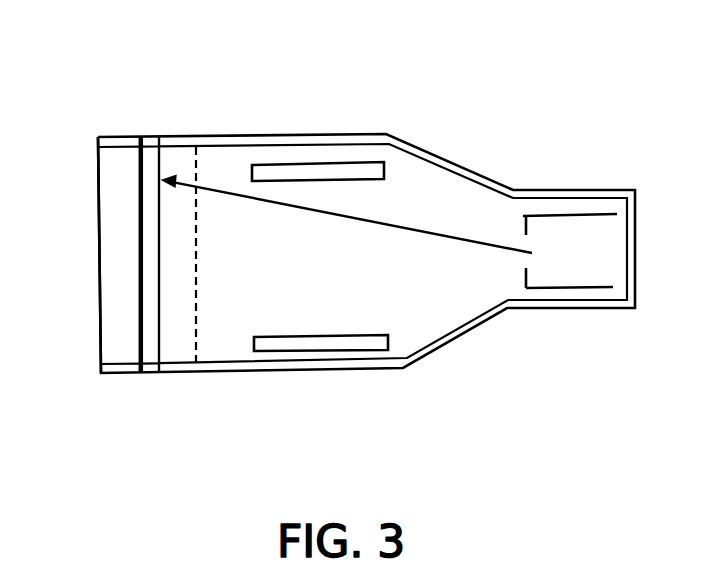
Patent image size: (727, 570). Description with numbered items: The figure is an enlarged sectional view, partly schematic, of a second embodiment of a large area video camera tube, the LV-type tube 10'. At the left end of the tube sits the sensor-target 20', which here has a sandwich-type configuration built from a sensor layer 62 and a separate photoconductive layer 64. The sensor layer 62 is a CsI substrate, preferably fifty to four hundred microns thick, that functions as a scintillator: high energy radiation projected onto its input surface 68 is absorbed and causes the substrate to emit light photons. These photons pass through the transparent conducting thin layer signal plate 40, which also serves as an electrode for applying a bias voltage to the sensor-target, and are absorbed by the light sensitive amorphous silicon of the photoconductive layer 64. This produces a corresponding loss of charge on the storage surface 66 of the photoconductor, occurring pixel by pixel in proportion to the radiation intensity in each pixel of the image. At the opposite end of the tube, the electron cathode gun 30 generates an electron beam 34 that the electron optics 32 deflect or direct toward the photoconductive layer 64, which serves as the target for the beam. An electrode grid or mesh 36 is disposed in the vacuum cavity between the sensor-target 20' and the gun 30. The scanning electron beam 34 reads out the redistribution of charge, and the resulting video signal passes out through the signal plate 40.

The LV-type tube 10' is at (366, 197).
The sensor-target 20' is at (102, 182).
The electron cathode gun 30 is at (573, 216).
The electron optics 32 is at (352, 170).
The electron beam 34 is at (441, 234).
The electrode grid or mesh 36 is at (199, 316).
The transparent conducting substrate 40 is at (137, 372).
The sensor layer 62 is at (115, 268).
The photoconductive layer 64 is at (147, 290).
The storage surface 66 is at (160, 227).
The input surface 68 is at (98, 208).